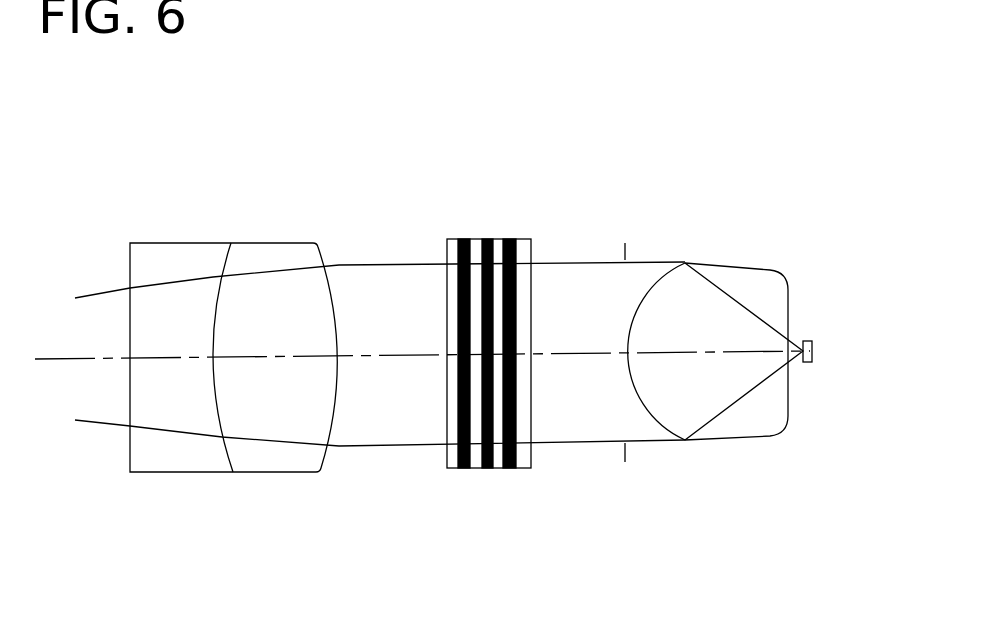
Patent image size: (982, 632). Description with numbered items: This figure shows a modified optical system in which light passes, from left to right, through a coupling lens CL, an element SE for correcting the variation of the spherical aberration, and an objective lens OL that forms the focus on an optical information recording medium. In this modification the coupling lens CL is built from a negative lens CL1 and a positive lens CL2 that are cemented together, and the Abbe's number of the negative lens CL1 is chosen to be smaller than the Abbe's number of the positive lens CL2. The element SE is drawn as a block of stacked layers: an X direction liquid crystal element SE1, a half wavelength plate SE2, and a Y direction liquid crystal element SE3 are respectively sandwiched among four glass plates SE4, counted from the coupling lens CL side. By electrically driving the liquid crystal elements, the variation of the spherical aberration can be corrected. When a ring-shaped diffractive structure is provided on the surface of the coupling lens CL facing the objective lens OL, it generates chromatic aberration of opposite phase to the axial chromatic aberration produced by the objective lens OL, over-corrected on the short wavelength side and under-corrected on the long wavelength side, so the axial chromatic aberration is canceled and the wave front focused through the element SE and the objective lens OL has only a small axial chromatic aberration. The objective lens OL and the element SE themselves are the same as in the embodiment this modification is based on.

The coupling lens CL is at (282, 226).
The negative lens CL1 is at (145, 257).
The positive lens CL2 is at (305, 252).
The element for correcting the variation of the spherical aberration SE is at (535, 229).
The X direction liquid crystal element SE1 is at (465, 468).
The ½ wavelength plate SE2 is at (487, 468).
The Y direction liquid crystal element SE3 is at (512, 468).
The glass plates SE4 is at (523, 410).
The objective lens OL is at (753, 277).